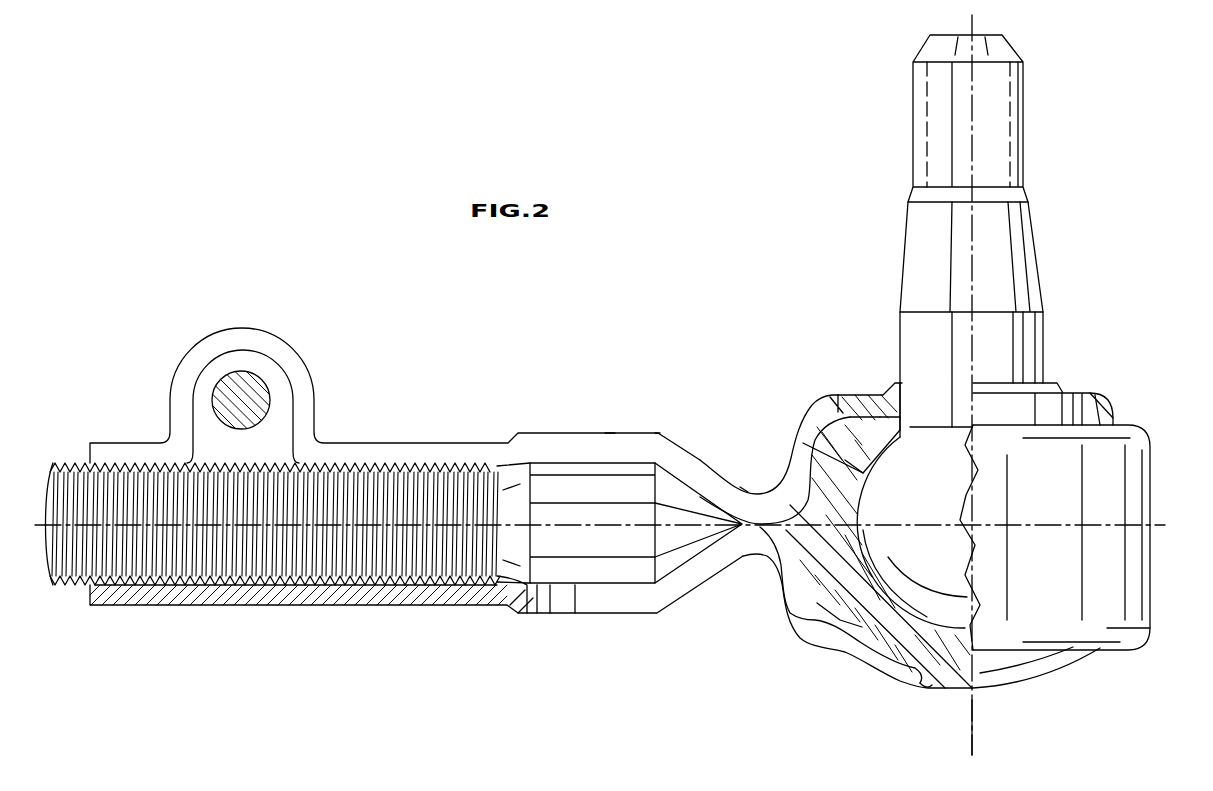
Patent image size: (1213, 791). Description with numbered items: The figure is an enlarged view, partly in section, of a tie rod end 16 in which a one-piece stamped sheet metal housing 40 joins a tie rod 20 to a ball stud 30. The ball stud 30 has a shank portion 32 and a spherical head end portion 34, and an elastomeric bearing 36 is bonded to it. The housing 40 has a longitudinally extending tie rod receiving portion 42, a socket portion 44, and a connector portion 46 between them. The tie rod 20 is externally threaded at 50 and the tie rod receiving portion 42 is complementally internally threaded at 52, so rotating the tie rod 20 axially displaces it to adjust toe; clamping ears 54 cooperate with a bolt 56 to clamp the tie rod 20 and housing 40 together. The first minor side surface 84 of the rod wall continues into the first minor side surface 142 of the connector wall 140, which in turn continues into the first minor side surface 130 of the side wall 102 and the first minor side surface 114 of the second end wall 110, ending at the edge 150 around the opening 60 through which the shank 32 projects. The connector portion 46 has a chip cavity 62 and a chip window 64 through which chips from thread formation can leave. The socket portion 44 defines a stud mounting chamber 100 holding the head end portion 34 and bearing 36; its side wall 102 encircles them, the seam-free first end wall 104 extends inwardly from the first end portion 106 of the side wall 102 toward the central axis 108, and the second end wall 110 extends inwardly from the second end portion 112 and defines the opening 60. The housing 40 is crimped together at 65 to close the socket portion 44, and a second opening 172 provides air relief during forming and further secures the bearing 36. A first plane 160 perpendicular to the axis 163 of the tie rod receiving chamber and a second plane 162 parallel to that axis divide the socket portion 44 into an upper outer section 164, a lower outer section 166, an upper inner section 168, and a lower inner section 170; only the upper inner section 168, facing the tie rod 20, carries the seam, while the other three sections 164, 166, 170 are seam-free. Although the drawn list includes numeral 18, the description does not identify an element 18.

The tie rod end 16 is at (614, 292).
The ball joint socket assembly 18 is at (1153, 343).
The tie rod 20 is at (65, 478).
The ball stud 30 is at (1053, 328).
The shank portion 32 is at (1038, 236).
The head end portion 34 is at (914, 511).
The elastomeric bearing 36 is at (858, 437).
The sheet metal housing 40 is at (570, 412).
The tie rod receiving portion 42 is at (412, 438).
The socket portion 44 is at (803, 397).
The connector portion 46 is at (751, 469).
The external threads 50 is at (174, 588).
The internal threads 52 is at (216, 580).
The clamping ears 54 is at (272, 340).
The bolt 56 is at (232, 397).
The opening 60 is at (855, 405).
The chip cavity 62 is at (572, 557).
The chip window 64 is at (593, 600).
The crimp 65 is at (770, 552).
The first minor side surface 84 is at (471, 452).
The stud mounting chamber 100 is at (860, 430).
The side wall 102 is at (1133, 480).
The first end wall 104 is at (900, 665).
The first end portion 106 is at (1138, 645).
The central axis 108 is at (972, 110).
The second end wall 110 is at (1076, 392).
The second end portion 112 is at (1100, 397).
The first minor side surface 114 is at (832, 408).
The first minor side surface 130 is at (802, 462).
The connector wall 140 is at (660, 432).
The first minor side surface 142 is at (611, 443).
The edge 150 is at (864, 418).
The first plane 160 is at (972, 740).
The second plane 162 is at (1123, 528).
The axis of the tie rod receiving chamber 163 is at (1160, 524).
The upper outer section 164 is at (1039, 503).
The lower outer section 166 is at (1039, 581).
The upper inner section 168 is at (848, 470).
The lower inner section 170 is at (838, 650).
The second opening 172 is at (927, 682).